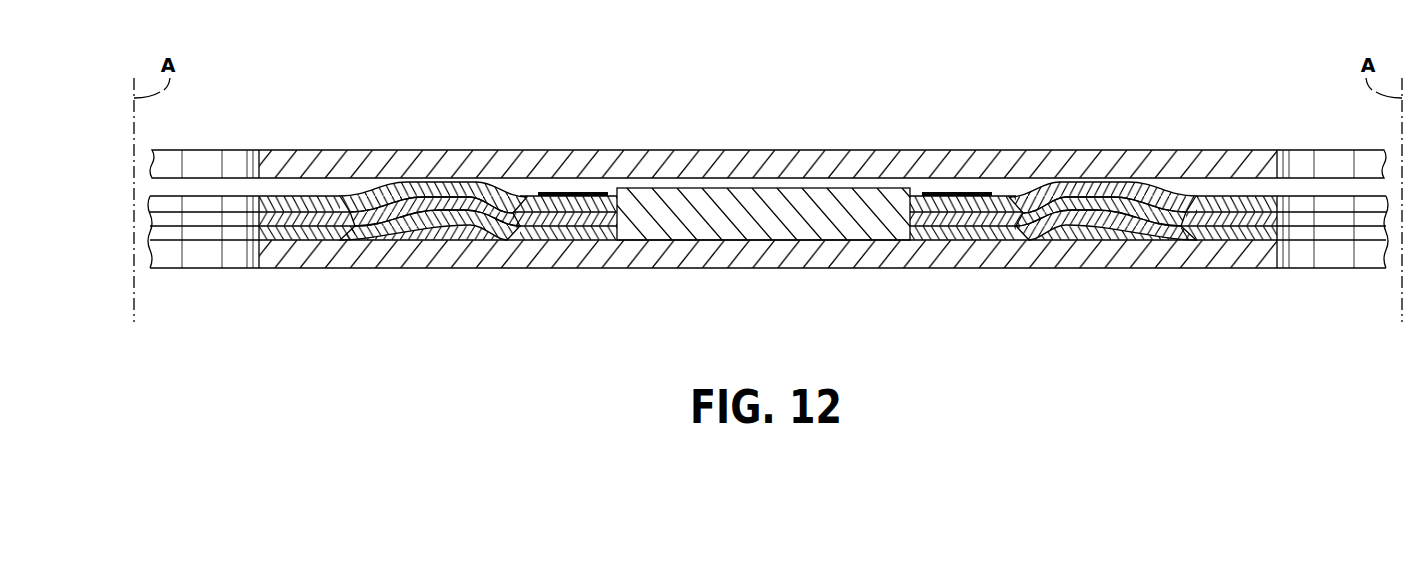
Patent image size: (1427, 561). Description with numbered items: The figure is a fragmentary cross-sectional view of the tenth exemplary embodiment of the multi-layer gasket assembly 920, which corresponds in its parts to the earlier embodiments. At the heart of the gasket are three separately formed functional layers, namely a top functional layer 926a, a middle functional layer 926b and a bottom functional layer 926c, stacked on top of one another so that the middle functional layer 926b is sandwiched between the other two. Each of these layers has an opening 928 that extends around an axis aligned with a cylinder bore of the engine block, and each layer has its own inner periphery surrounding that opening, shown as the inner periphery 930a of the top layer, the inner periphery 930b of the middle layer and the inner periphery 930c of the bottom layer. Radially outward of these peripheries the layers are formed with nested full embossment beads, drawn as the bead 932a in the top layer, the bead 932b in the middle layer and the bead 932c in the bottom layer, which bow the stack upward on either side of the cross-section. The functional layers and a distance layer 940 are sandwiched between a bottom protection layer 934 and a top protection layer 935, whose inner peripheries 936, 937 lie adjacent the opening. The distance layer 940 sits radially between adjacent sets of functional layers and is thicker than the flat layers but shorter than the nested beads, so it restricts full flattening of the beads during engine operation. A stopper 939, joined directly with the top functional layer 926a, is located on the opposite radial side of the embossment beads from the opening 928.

The multi-layer gasket assembly 920 is at (1018, 100).
The top functional layer 926a is at (524, 206).
The middle functional layer 926b is at (553, 220).
The bottom functional layer 926c is at (585, 233).
The opening 928 is at (198, 232).
The inner periphery of top functional layer 930a is at (258, 203).
The inner periphery of middle functional layer 930b is at (258, 218).
The inner periphery of bottom functional layer 930c is at (258, 236).
The full embossment bead of top functional layer 932a is at (437, 188).
The full embossment bead of middle functional layer 932b is at (455, 198).
The full embossment bead of bottom functional layer 932c is at (466, 203).
The bottom protection layer 934 is at (723, 255).
The top protection layer 935 is at (766, 166).
The inner periphery of bottom protection layer 936 is at (258, 255).
The inner periphery of top protection layer 937 is at (257, 167).
The stopper 939 is at (573, 192).
The distance layer 940 is at (810, 228).